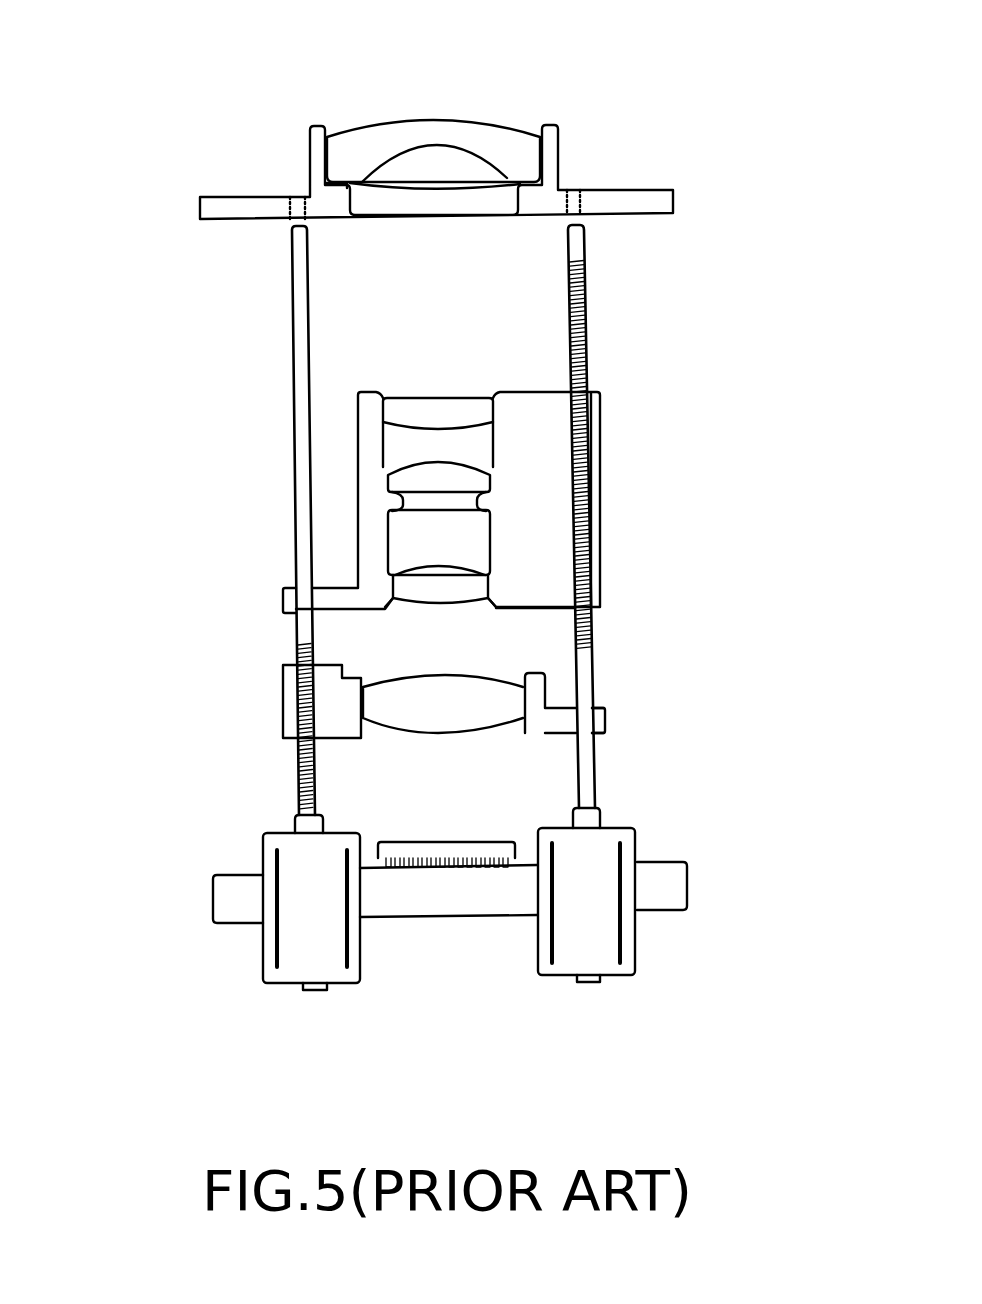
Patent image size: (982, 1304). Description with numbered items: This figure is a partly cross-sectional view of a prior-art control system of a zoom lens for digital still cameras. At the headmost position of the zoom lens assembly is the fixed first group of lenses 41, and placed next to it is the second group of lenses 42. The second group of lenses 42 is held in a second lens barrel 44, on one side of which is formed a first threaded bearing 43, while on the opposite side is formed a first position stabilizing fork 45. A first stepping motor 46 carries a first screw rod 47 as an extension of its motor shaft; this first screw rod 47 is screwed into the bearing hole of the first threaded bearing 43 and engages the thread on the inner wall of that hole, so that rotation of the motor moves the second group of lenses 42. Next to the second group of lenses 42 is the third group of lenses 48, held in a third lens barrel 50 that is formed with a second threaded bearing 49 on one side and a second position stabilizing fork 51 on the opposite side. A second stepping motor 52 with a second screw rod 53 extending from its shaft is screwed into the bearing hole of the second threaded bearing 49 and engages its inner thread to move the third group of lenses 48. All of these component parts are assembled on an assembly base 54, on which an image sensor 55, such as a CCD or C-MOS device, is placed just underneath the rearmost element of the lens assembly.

The first group of lenses 41 is at (497, 192).
The second group of lenses 42 is at (433, 397).
The first threaded bearing 43 is at (562, 493).
The second lens barrel 44 is at (370, 487).
The first position stabilizing fork 45 is at (287, 603).
The first stepping motor 46 is at (640, 848).
The first screw rod 47 is at (585, 320).
The third group of lenses 48 is at (465, 713).
The second threaded bearing 49 is at (283, 703).
The third lens barrel 50 is at (543, 695).
The second position stabilizing fork 51 is at (606, 720).
The second stepping motor 52 is at (290, 920).
The second screw rod 53 is at (299, 775).
The assembly base 54 is at (492, 903).
The image sensor 55 is at (438, 868).